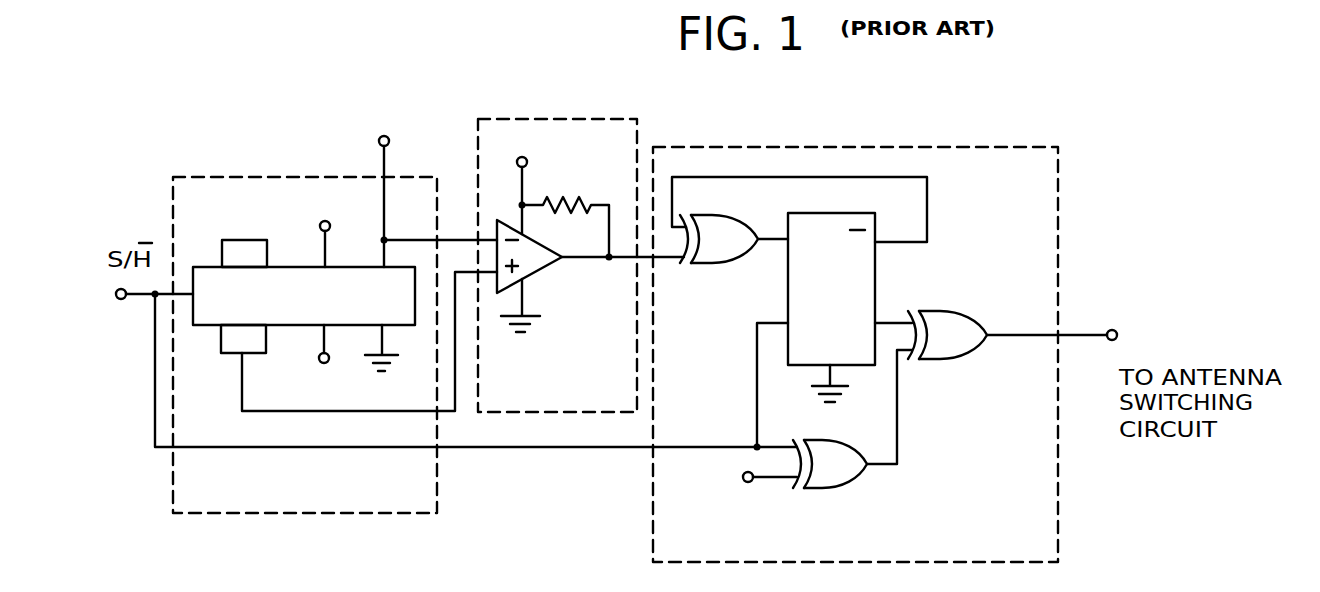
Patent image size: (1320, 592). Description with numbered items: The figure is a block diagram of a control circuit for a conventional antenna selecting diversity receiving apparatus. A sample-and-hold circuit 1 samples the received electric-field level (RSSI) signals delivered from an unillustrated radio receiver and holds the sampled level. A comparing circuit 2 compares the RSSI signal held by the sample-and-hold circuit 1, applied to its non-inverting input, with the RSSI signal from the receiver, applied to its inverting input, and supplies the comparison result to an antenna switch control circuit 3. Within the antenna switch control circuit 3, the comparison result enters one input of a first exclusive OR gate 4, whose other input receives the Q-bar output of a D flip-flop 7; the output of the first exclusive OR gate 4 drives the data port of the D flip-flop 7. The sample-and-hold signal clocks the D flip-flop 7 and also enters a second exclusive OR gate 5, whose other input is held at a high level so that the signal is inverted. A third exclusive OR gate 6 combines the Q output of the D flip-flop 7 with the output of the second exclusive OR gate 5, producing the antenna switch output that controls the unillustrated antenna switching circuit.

The sample-and-hold circuit 1 is at (272, 176).
The comparing circuit 2 is at (567, 119).
The antenna switch control circuit 3 is at (897, 129).
The first exclusive OR gate 4 is at (715, 263).
The second exclusive OR gate 5 is at (832, 438).
The third exclusive OR gate 6 is at (945, 357).
The D flip-flop 7 is at (878, 273).